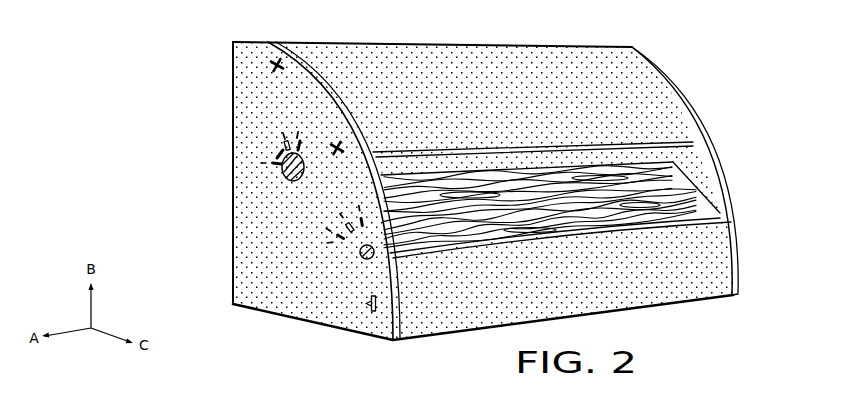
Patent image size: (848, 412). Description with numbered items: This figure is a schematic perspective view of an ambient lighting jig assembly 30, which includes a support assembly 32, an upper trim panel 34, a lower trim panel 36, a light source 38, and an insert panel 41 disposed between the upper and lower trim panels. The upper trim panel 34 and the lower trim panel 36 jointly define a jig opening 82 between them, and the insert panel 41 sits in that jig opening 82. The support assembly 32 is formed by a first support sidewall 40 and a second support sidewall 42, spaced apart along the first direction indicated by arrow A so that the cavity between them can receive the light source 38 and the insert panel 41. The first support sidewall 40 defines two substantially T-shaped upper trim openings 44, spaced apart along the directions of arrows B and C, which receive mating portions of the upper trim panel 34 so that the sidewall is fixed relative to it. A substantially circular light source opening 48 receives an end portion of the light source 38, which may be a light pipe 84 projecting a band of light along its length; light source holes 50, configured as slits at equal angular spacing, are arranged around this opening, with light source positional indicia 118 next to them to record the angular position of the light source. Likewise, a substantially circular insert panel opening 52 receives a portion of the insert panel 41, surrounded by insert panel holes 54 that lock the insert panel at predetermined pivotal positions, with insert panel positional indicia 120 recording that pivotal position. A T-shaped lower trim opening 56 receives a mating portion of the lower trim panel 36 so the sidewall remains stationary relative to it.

The jig assembly 30 is at (672, 76).
The support assembly 32 is at (228, 182).
The upper trim panel 34 is at (657, 108).
The lower trim panel 36 is at (690, 277).
The light source 38 is at (288, 183).
The first support sidewall 40 is at (245, 270).
The insert panel 41 is at (683, 198).
The second support sidewall 42 is at (727, 190).
The upper trim openings 44 is at (339, 146).
The light source opening 48 is at (291, 194).
The light source holes 50 is at (275, 157).
The insert panel opening 52 is at (355, 261).
The insert panel holes 54 is at (328, 242).
The lower trim opening 56 is at (362, 313).
The jig opening 82 is at (693, 161).
The light pipe 84 is at (282, 175).
The light source positional indicia 118 is at (266, 142).
The insert panel positional indicia 120 is at (337, 254).